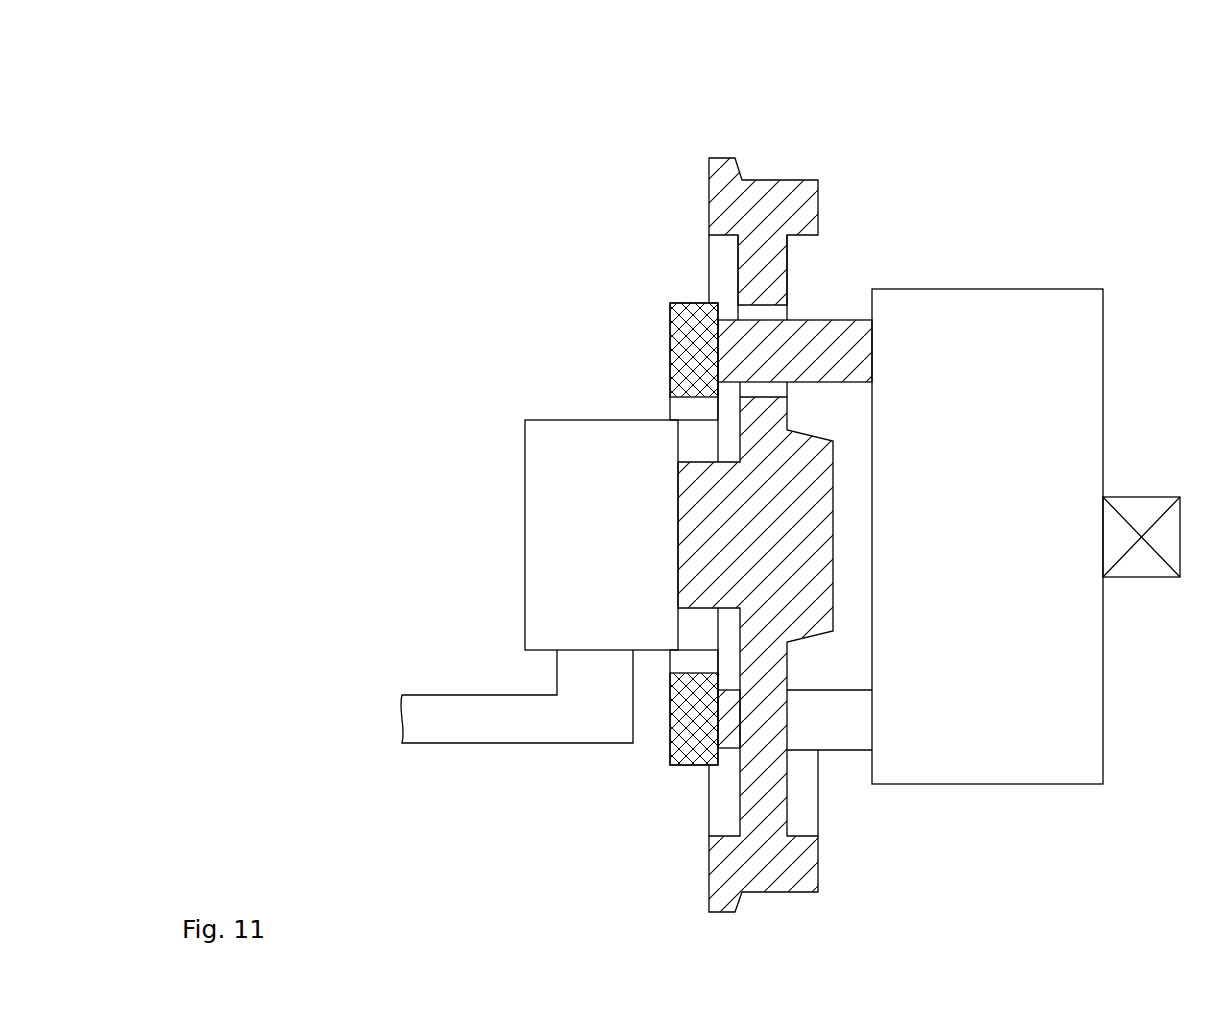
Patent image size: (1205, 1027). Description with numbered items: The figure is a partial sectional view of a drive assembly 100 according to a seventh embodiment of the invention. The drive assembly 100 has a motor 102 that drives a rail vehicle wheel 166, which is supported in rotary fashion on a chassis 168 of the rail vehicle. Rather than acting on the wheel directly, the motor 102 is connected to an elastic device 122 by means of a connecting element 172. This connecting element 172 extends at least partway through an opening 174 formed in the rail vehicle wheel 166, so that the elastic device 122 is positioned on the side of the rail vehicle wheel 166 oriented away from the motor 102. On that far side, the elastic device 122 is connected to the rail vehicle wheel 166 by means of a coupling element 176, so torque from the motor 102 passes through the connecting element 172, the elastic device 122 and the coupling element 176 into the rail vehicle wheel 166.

The drive assembly 100 is at (1085, 150).
The motor 102 is at (999, 283).
The elastic device 122 is at (675, 313).
The rail vehicle wheel 166 is at (792, 165).
The chassis 168 is at (545, 403).
The connecting element 172 is at (842, 333).
The opening 174 is at (762, 303).
The coupling element 176 is at (730, 745).